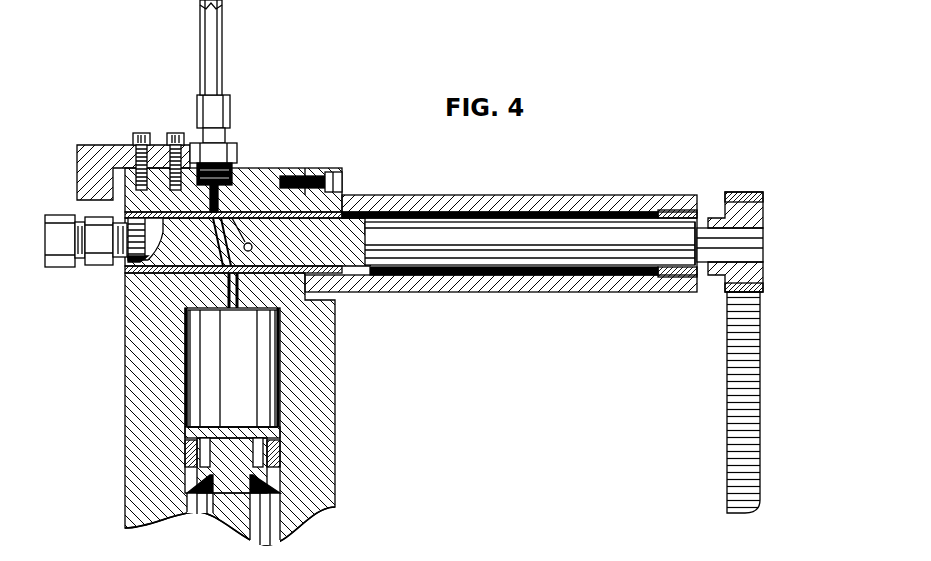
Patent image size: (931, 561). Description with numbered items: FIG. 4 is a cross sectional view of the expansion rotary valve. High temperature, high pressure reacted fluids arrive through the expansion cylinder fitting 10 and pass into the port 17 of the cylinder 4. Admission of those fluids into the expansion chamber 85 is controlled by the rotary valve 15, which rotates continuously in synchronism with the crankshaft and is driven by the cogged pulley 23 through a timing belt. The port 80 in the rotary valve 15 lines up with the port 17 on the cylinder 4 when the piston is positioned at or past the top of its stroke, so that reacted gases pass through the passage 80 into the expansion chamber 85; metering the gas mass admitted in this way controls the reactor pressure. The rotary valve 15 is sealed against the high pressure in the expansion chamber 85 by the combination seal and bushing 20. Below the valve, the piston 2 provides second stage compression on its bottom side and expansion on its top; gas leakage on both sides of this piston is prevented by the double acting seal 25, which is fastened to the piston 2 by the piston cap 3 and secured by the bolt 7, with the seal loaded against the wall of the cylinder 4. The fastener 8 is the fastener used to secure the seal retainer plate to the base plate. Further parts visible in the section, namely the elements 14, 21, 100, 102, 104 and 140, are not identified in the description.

The piston 2 is at (237, 517).
The piston cap 3 is at (280, 418).
The cylinder 4 is at (123, 340).
The bolt 7 is at (208, 412).
The fastener 8 is at (345, 182).
The expansion cylinder fitting 10 is at (197, 138).
The outer tube 14 is at (510, 292).
The rotary valve 15 is at (443, 275).
The port 17 is at (178, 292).
The combination seal and bushing 20 is at (305, 300).
The tube end inserts 21 is at (678, 282).
The cogged pulley 23 is at (763, 270).
The double acting seal 25 is at (267, 457).
The port 80 is at (123, 277).
The expansion chamber 85 is at (232, 366).
The mounting bracket 100 is at (95, 146).
The bolts 102 is at (138, 133).
The inlet fitting 104 is at (63, 215).
The supply tube 140 is at (214, 58).